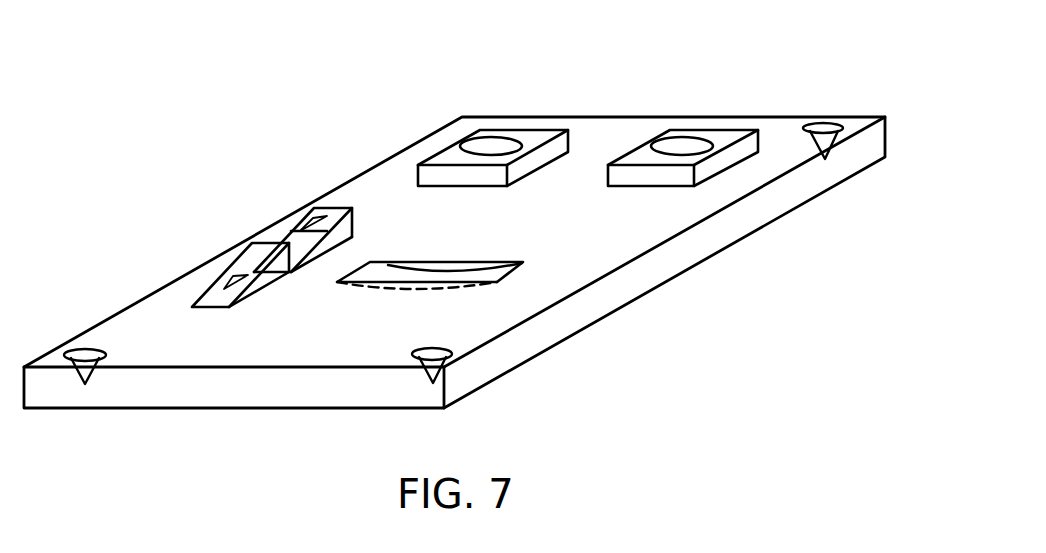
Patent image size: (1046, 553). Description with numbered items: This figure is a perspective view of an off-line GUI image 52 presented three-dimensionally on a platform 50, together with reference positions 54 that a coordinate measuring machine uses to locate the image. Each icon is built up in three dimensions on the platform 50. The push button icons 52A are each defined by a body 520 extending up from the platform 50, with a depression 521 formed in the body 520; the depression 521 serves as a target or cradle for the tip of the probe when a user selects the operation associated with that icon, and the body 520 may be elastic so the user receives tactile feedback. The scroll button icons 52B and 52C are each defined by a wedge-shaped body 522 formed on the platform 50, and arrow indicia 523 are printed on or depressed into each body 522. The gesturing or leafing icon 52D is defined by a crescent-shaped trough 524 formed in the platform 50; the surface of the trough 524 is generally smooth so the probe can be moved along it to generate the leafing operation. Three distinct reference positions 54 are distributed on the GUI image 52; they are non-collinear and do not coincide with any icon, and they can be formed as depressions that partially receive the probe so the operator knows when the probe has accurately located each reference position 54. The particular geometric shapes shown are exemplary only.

The platform 50 is at (735, 220).
The GUI image 52 is at (332, 182).
The push button icon 52A is at (541, 100).
The body 520 is at (490, 133).
The depression 521 is at (473, 147).
The scroll button icon 52B is at (295, 228).
The wedge-shaped body 522 is at (325, 257).
The arrow indicia 523 is at (296, 226).
The scroll button icon 52C is at (203, 292).
The gesturing or leafing icon 52D is at (523, 268).
The crescent-shaped trough 524 is at (495, 272).
The reference position 54 is at (85, 355).